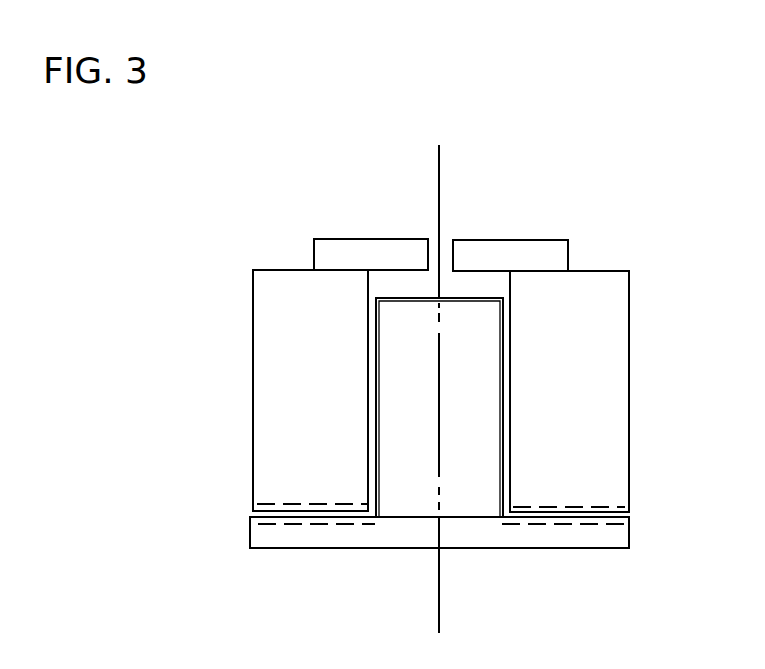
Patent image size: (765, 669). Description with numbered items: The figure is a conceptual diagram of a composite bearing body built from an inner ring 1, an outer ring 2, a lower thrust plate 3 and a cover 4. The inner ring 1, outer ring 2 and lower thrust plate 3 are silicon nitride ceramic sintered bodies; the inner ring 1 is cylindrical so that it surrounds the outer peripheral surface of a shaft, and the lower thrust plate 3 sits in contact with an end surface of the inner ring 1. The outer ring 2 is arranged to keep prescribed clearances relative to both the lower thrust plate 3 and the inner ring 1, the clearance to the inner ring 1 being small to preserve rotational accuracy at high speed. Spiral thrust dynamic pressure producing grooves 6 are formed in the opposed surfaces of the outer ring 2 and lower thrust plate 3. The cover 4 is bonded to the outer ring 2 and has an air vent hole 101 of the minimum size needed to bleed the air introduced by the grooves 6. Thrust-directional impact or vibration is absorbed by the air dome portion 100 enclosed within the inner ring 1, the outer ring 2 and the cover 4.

The inner ring 1 is at (462, 323).
The outer ring 2 is at (608, 328).
The lower thrust plate 3 is at (617, 538).
The cover 4 is at (543, 255).
The thrust dynamic pressure producing grooves 6 is at (560, 507).
The air dome portion 100 is at (405, 287).
The air vent hole 101 is at (446, 240).